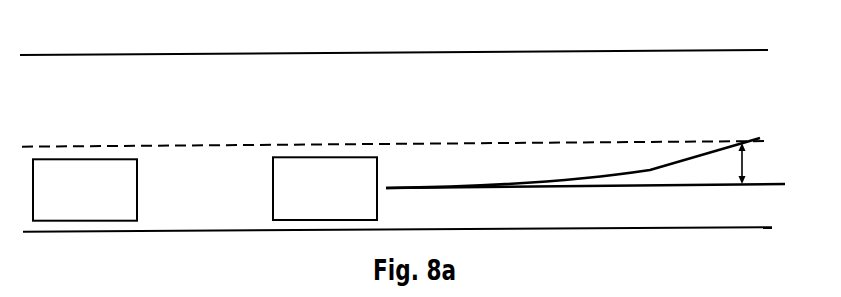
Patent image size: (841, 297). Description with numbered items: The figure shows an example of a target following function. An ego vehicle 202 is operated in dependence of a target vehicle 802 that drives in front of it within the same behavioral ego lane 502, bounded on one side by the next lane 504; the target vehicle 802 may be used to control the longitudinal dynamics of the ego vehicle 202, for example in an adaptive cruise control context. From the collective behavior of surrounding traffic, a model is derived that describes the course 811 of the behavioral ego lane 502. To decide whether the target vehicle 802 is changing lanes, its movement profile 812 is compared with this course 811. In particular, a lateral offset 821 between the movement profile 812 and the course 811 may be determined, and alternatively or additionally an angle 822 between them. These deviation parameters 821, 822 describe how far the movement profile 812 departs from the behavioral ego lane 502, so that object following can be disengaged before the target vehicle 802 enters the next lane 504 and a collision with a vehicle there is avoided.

The next lane 504 is at (365, 72).
The behavioral ego lane 502 is at (215, 172).
The ego vehicle 202 is at (85, 158).
The target vehicle 802 is at (335, 157).
The course of the behavioral lane 811 is at (628, 183).
The movement profile of the target vehicle 812 is at (713, 151).
The lateral offset 821 is at (747, 158).
The angle 822 is at (677, 163).